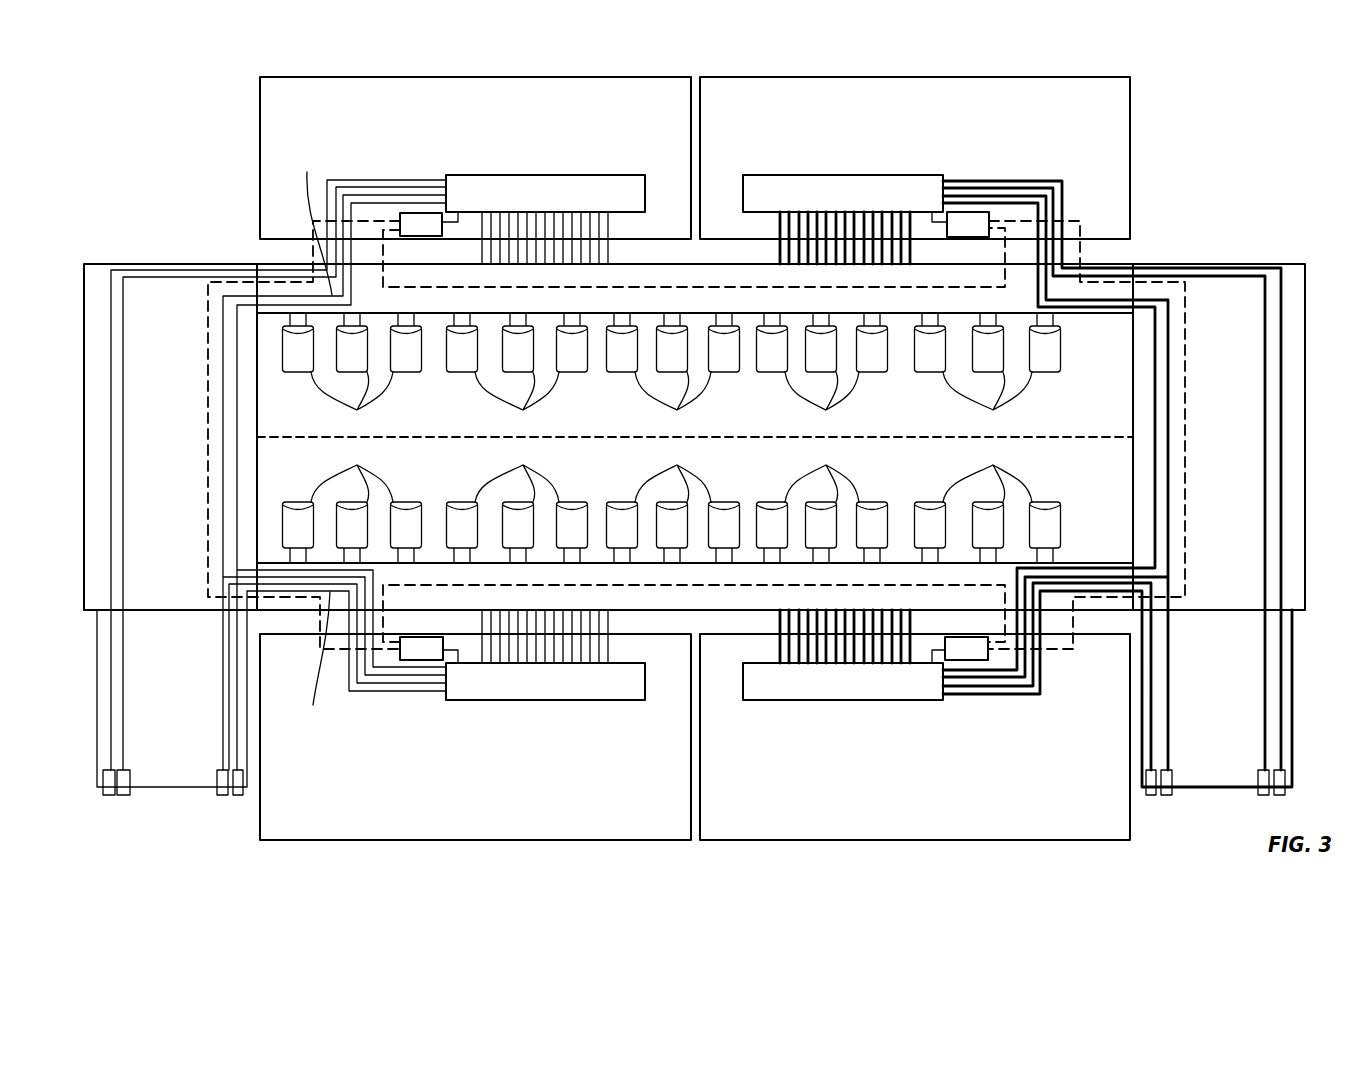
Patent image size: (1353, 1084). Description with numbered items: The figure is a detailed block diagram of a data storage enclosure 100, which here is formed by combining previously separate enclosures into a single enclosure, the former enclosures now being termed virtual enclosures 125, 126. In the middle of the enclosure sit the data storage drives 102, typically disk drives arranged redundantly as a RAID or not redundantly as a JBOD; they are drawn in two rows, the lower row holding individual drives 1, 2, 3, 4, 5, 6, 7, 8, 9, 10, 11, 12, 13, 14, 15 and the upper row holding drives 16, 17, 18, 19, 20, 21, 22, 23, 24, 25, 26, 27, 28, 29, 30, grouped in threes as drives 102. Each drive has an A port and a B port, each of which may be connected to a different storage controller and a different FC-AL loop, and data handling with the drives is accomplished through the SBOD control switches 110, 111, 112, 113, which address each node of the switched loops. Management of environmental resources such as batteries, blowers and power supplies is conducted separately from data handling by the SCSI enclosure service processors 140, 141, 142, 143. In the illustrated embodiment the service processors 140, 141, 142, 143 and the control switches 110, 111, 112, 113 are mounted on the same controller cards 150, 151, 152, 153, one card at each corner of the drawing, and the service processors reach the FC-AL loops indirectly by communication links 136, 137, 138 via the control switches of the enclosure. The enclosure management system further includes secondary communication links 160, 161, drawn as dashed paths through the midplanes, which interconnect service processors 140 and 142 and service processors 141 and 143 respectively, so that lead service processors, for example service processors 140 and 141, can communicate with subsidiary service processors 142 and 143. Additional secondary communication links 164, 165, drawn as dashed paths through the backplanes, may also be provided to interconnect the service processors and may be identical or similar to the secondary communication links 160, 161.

The data storage enclosure 100 is at (1120, 75).
The data storage drives 102 is at (671, 437).
The control switch 110 is at (615, 700).
The control switch 111 is at (885, 700).
The control switch 112 is at (615, 175).
The control switch 113 is at (852, 175).
The virtual enclosure 125 is at (1135, 514).
The virtual enclosure 126 is at (1155, 243).
The communication link 136 is at (460, 660).
The communication link 137 is at (932, 660).
The communication link 138 is at (457, 217).
The service processor 140 is at (435, 637).
The service processor 141 is at (950, 637).
The service processor 142 is at (433, 238).
The service processor 143 is at (952, 237).
The controller card 150 is at (260, 830).
The controller card 151 is at (1130, 830).
The controller card 152 is at (260, 157).
The controller card 153 is at (1130, 157).
The secondary communication link 160 is at (204, 372).
The secondary communication link 161 is at (1187, 374).
The additional secondary communication link 164 is at (622, 585).
The additional secondary communication link 165 is at (622, 287).
The disk drive 1 is at (298, 520).
The disk drive 2 is at (352, 520).
The disk drive 3 is at (406, 520).
The disk drive 4 is at (462, 520).
The disk drive 5 is at (518, 520).
The disk drive 6 is at (572, 520).
The disk drive 7 is at (622, 520).
The disk drive 8 is at (672, 520).
The disk drive 9 is at (724, 520).
The disk drive 10 is at (772, 520).
The disk drive 11 is at (821, 520).
The disk drive 12 is at (872, 520).
The disk drive 13 is at (930, 520).
The disk drive 14 is at (988, 520).
The disk drive 15 is at (1045, 520).
The disk drive 16 is at (298, 357).
The disk drive 17 is at (352, 357).
The disk drive 18 is at (406, 357).
The disk drive 19 is at (462, 357).
The disk drive 20 is at (518, 357).
The disk drive 21 is at (572, 357).
The disk drive 22 is at (622, 357).
The disk drive 23 is at (672, 357).
The disk drive 24 is at (724, 357).
The disk drive 25 is at (772, 357).
The disk drive 26 is at (821, 357).
The disk drive 27 is at (872, 357).
The disk drive 28 is at (930, 357).
The disk drive 29 is at (988, 357).
The disk drive 30 is at (1045, 357).